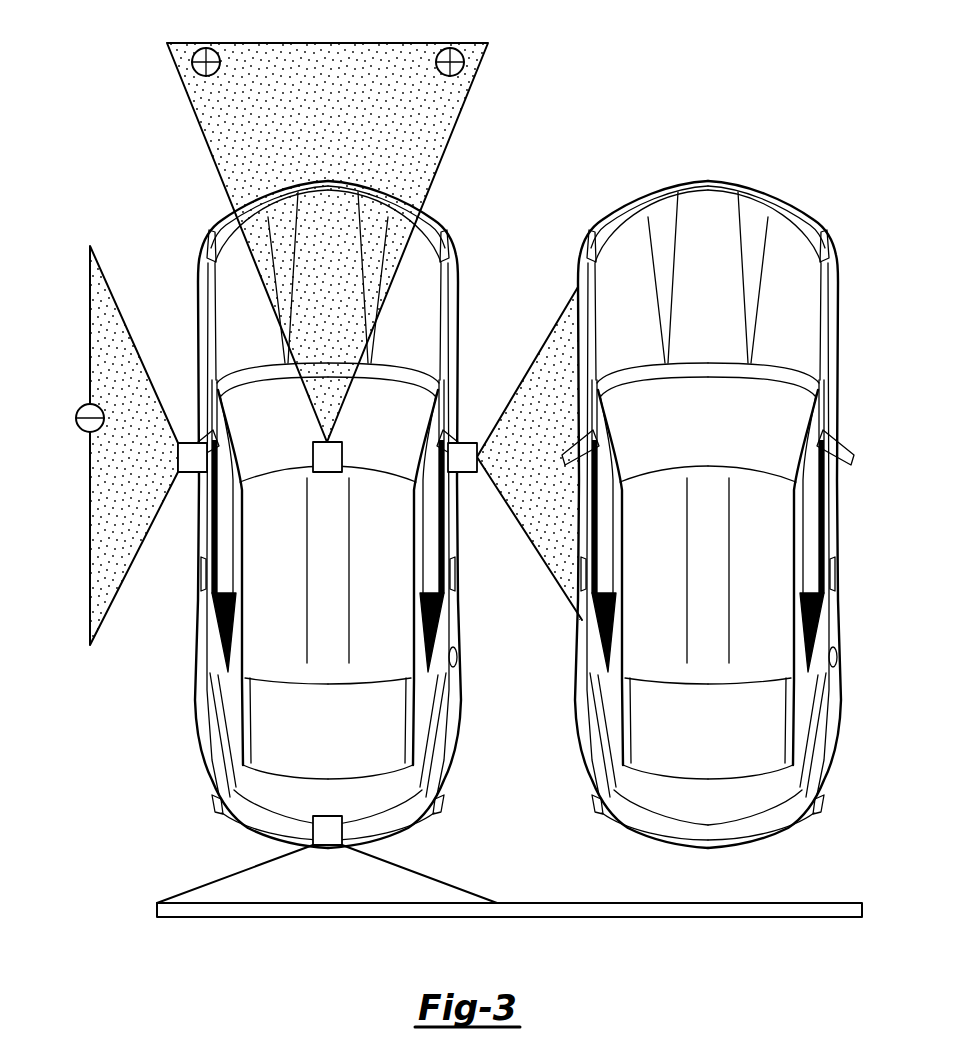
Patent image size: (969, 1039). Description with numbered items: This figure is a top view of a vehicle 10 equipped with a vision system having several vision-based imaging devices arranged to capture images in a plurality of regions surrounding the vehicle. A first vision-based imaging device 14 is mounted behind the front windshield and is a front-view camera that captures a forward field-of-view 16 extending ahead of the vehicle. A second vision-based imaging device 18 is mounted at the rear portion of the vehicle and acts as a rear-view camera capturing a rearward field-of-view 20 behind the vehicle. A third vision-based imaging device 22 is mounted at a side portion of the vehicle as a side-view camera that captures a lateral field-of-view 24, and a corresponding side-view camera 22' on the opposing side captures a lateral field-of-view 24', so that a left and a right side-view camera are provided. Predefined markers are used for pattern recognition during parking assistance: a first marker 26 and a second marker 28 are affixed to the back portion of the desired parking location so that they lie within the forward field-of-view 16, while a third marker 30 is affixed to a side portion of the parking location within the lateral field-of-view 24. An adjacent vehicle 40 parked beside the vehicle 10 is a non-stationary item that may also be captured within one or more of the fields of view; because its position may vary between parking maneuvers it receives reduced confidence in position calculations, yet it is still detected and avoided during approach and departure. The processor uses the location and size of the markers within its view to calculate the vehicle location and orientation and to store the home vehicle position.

The vehicle 10 is at (420, 765).
The first vision-based imaging device 14 is at (312, 458).
The forward field-of-view 16 is at (211, 160).
The second vision-based imaging device 18 is at (318, 816).
The rearward field-of-view 20 is at (226, 878).
The third vision-based imaging device 22 is at (188, 428).
The side-view camera 22' is at (470, 430).
The lateral field-of-view 24 is at (134, 426).
The lateral field-of-view 24' is at (529, 453).
The first marker 26 is at (192, 58).
The second marker 28 is at (464, 58).
The third marker 30 is at (80, 412).
The adjacent vehicle 40 is at (800, 765).